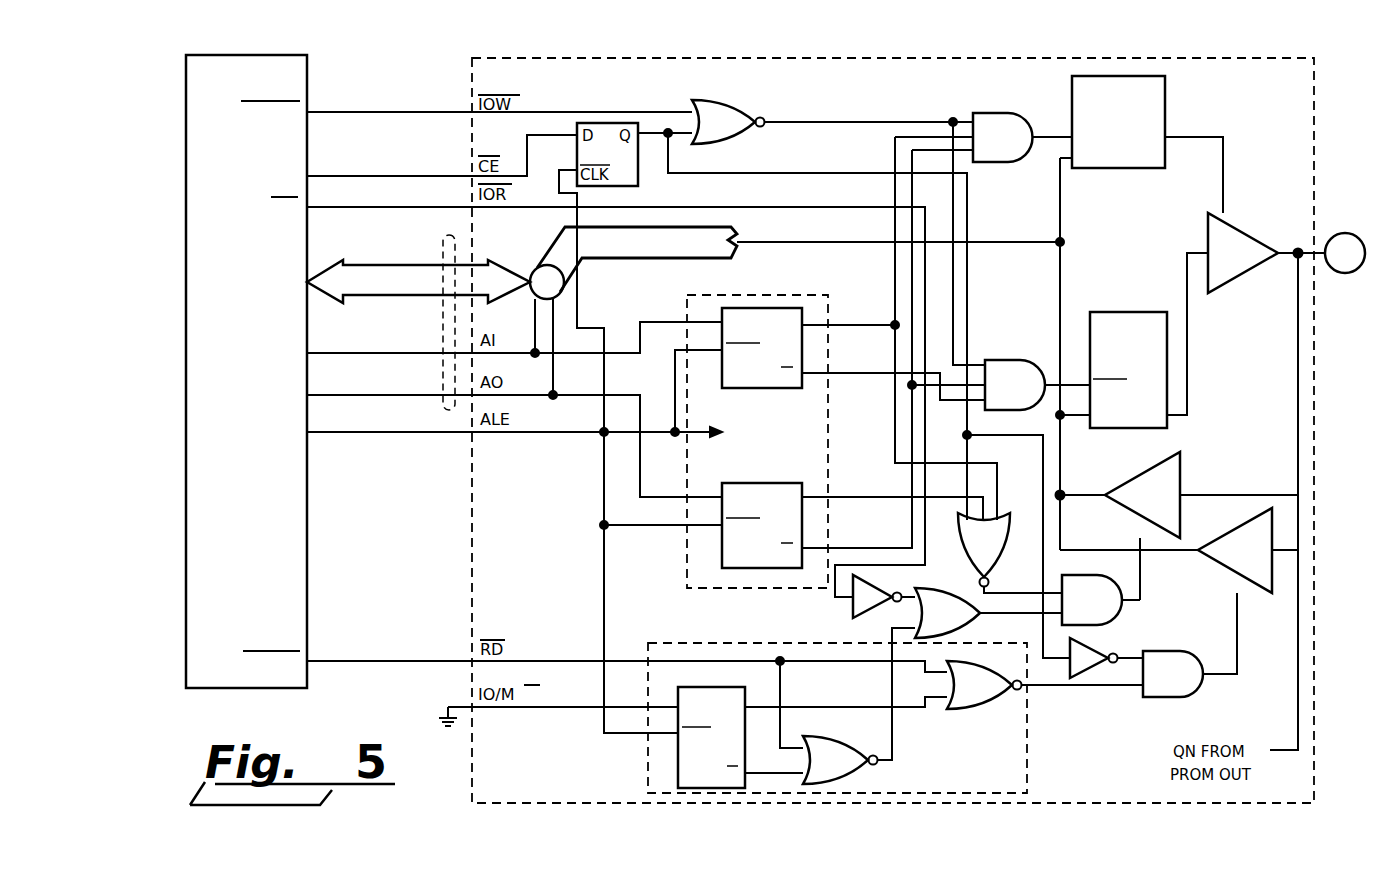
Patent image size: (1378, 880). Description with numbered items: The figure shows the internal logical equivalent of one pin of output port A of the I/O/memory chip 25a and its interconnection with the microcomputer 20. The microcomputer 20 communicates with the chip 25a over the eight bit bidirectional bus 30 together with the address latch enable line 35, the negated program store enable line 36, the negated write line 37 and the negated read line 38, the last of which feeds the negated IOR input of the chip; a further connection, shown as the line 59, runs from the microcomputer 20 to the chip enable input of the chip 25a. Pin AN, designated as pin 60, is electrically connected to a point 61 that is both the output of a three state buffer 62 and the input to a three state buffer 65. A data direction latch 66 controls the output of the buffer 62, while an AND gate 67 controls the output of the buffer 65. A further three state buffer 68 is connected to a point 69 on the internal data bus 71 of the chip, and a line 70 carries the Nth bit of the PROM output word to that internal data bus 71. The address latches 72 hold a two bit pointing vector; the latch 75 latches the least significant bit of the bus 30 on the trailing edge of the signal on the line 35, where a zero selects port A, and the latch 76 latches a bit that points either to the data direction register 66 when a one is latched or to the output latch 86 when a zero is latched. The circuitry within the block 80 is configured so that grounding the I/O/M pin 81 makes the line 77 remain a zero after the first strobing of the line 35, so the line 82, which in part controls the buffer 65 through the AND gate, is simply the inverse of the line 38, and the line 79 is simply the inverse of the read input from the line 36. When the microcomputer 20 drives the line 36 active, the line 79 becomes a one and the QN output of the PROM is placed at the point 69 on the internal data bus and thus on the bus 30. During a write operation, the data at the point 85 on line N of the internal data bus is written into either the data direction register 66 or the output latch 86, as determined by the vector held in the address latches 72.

The microcomputer 20 is at (237, 688).
The I/O/memory chip 25a is at (471, 773).
The eight bit bidirectional bus 30 is at (443, 236).
The address latch enable line 35 is at (400, 432).
The negated program store enable line 36 is at (382, 661).
The negated write line 37 is at (404, 112).
The negated read line 38 is at (380, 186).
The chip enable line 59 is at (405, 176).
The pin AN 60 is at (1332, 233).
The point 61 is at (1296, 246).
The three state buffer 62 is at (1243, 278).
The three state buffer 65 is at (1182, 472).
The data direction latch 66 is at (1135, 168).
The AND gate 67 is at (1110, 618).
The three state buffer 68 is at (1243, 593).
The point 69 is at (1060, 495).
The line 70 is at (1183, 554).
The internal data bus 71 is at (707, 256).
The address latches 72 is at (781, 435).
The latch 75 is at (722, 560).
The latch 76 is at (722, 388).
The line 77 is at (892, 628).
The line 79 is at (1094, 685).
The block 80 is at (662, 640).
The I/O/M pin 81 is at (448, 707).
The line 82 is at (1033, 613).
The point 85 is at (1060, 242).
The output latch 86 is at (1118, 312).